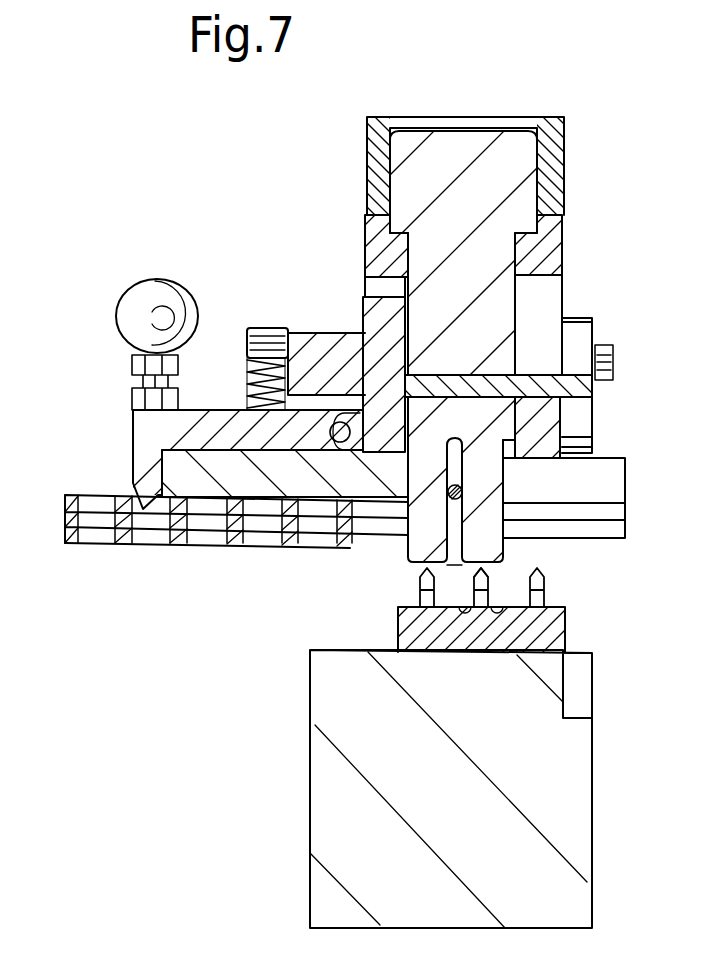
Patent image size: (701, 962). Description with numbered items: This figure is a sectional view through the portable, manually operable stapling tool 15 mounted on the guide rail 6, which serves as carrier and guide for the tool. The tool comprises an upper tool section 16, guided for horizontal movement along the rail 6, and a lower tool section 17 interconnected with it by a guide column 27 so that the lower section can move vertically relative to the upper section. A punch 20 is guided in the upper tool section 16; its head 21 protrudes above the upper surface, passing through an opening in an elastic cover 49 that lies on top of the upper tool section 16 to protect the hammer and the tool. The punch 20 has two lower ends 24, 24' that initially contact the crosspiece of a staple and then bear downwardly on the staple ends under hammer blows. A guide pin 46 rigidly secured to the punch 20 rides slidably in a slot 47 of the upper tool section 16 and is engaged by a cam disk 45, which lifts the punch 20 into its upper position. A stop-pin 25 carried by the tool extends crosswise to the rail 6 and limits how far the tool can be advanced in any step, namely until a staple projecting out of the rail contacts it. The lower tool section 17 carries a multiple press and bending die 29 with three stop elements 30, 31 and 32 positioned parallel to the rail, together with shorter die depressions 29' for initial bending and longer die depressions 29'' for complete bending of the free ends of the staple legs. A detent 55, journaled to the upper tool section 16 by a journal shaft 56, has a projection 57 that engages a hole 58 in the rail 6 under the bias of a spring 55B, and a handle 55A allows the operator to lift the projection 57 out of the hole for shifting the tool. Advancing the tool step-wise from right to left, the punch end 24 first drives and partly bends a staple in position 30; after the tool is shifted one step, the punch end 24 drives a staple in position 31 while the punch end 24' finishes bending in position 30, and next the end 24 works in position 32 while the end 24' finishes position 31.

The guide rail 6 is at (58, 545).
The stapling tool 15 is at (346, 243).
The upper tool section 16 is at (572, 251).
The lower tool section 17 is at (600, 820).
The punch 20 is at (515, 200).
The punch head 21 is at (488, 128).
The punch lower end 24 is at (394, 499).
The second punch lower end 24' is at (561, 506).
The stop-pin 25 is at (462, 490).
The guide column 27 is at (455, 593).
The multiple press and bending die 29 is at (512, 633).
The die depressions 29' is at (555, 662).
The die depressions 29'' is at (402, 664).
The stop element 30 is at (543, 585).
The stop element 31 is at (482, 582).
The stop element 32 is at (432, 607).
The cam disk 45 is at (580, 363).
The guide pin 46 is at (577, 388).
The slot 47 is at (543, 337).
The elastic cover 49 is at (548, 150).
The detent 55 is at (155, 425).
The handle 55A is at (151, 312).
The spring 55B is at (247, 373).
The journal shaft 56 is at (340, 422).
The projection 57 is at (143, 492).
The holes 58 is at (100, 520).